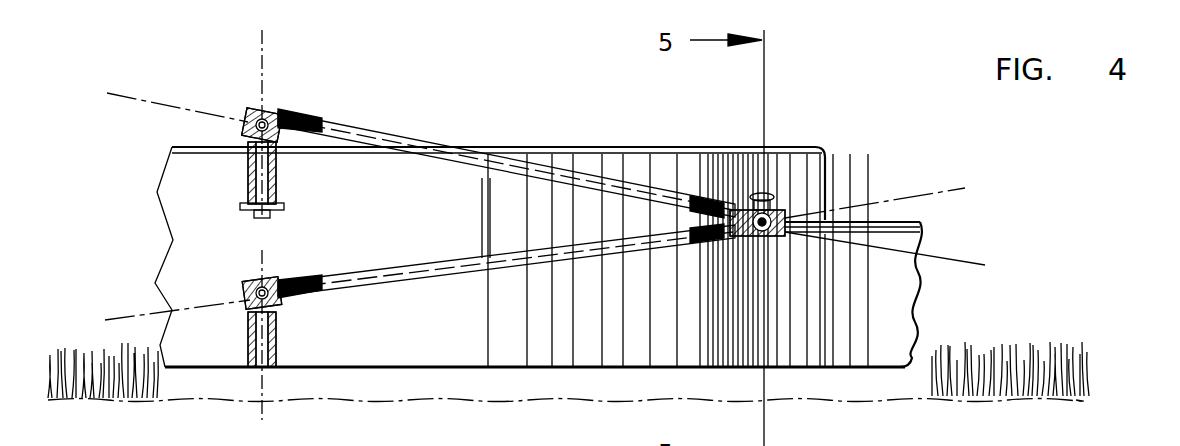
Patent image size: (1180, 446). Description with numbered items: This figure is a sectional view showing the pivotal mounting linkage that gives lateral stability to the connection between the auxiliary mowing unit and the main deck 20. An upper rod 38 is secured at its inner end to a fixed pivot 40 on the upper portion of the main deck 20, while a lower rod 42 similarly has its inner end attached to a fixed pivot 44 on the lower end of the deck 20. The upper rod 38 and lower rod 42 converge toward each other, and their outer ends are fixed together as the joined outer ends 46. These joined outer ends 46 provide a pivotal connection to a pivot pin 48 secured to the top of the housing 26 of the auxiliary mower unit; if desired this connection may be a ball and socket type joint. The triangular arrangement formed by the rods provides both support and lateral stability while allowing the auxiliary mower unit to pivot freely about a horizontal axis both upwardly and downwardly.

The main deck 20 is at (562, 146).
The housing 26 is at (930, 232).
The upper rod 38 is at (393, 146).
The fixed pivot 40 is at (268, 118).
The lower rod 42 is at (393, 288).
The fixed pivot 44 is at (253, 300).
The joined outer ends 46 is at (722, 205).
The pivot pin 48 is at (780, 216).